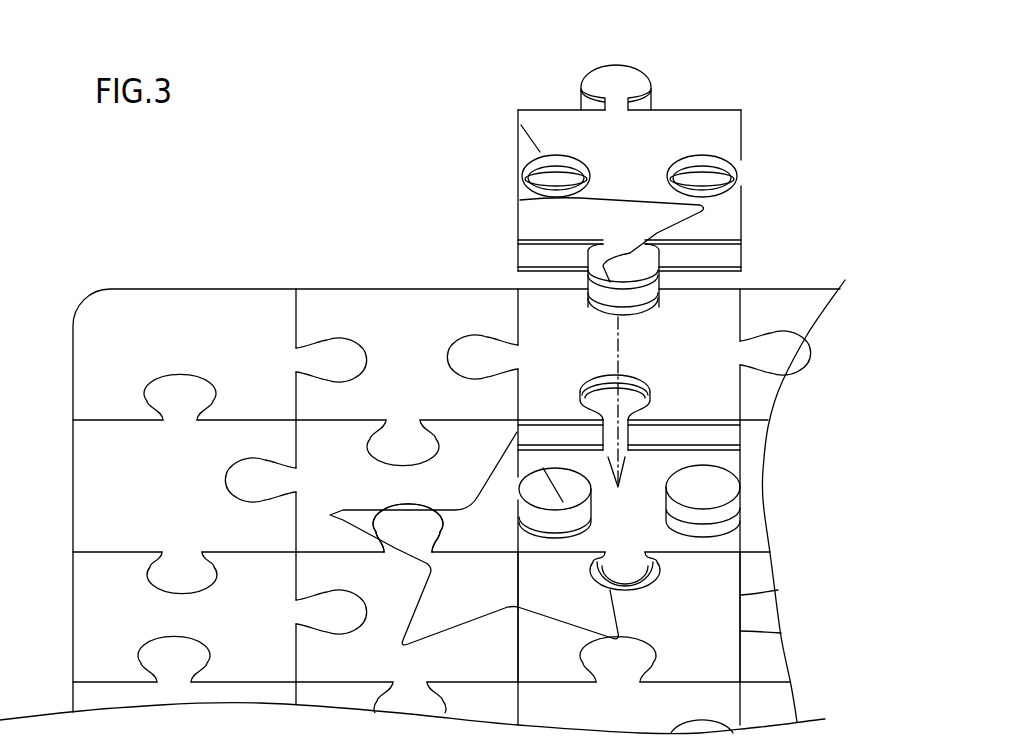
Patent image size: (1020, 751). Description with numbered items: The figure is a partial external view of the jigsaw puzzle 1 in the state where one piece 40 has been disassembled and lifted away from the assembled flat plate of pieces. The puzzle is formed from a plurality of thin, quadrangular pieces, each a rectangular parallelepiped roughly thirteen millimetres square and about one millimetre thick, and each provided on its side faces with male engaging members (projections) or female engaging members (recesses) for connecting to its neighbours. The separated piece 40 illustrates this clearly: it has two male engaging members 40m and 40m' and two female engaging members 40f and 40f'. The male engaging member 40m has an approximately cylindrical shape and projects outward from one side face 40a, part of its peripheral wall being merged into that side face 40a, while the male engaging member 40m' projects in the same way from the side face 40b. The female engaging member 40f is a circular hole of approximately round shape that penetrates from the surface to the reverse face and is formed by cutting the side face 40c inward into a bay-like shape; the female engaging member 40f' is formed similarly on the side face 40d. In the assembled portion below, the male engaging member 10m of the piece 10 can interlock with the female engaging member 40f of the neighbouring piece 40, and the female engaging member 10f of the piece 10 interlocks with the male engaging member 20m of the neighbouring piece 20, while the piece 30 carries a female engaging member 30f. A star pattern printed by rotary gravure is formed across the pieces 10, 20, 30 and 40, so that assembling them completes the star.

The jigsaw puzzle 1 is at (238, 245).
The piece 10 is at (340, 510).
The female engaging member 10f is at (397, 508).
The male engaging member 10m is at (578, 488).
The piece 20 is at (338, 663).
The male engaging member 20m is at (428, 520).
The piece 30 is at (562, 655).
The female engaging member 30f is at (652, 580).
The piece 40 is at (563, 227).
The side face 40a is at (543, 253).
The side face 40b is at (548, 110).
The side face 40c is at (517, 157).
The side face 40d is at (742, 202).
The female engaging member 40f is at (513, 187).
The female engaging member 40f' is at (742, 157).
The male engaging member 40m is at (691, 279).
The male engaging member 40m' is at (639, 64).